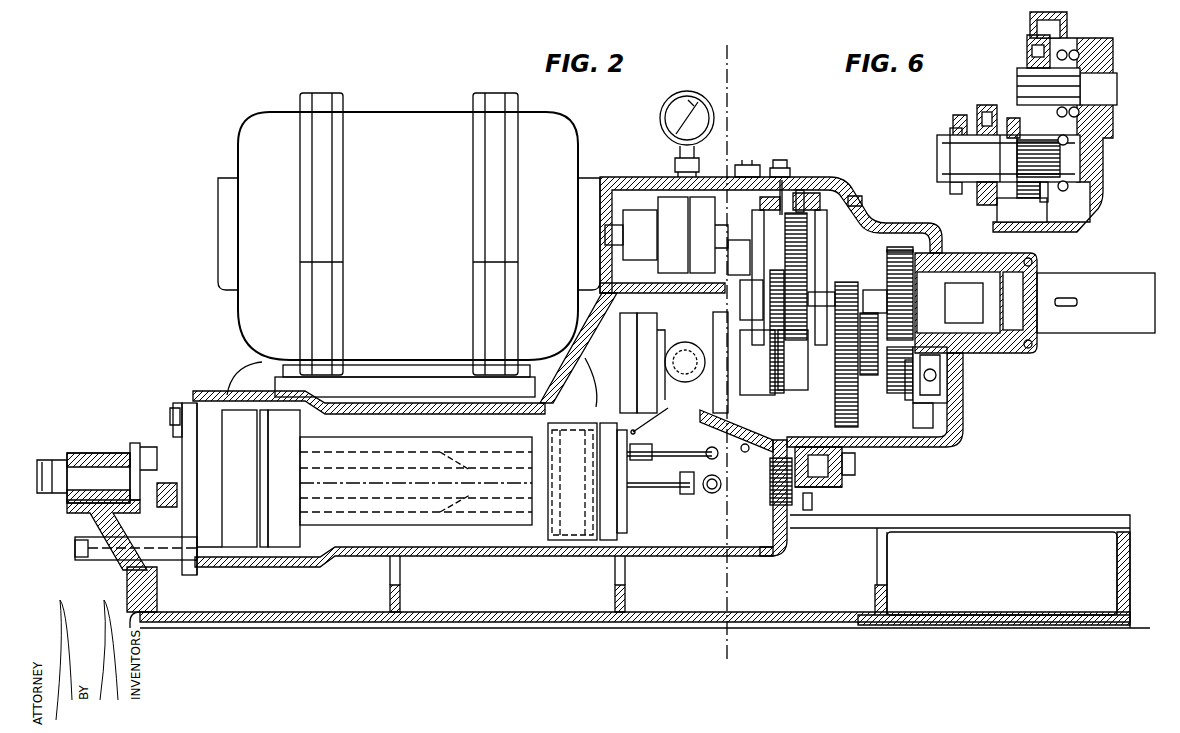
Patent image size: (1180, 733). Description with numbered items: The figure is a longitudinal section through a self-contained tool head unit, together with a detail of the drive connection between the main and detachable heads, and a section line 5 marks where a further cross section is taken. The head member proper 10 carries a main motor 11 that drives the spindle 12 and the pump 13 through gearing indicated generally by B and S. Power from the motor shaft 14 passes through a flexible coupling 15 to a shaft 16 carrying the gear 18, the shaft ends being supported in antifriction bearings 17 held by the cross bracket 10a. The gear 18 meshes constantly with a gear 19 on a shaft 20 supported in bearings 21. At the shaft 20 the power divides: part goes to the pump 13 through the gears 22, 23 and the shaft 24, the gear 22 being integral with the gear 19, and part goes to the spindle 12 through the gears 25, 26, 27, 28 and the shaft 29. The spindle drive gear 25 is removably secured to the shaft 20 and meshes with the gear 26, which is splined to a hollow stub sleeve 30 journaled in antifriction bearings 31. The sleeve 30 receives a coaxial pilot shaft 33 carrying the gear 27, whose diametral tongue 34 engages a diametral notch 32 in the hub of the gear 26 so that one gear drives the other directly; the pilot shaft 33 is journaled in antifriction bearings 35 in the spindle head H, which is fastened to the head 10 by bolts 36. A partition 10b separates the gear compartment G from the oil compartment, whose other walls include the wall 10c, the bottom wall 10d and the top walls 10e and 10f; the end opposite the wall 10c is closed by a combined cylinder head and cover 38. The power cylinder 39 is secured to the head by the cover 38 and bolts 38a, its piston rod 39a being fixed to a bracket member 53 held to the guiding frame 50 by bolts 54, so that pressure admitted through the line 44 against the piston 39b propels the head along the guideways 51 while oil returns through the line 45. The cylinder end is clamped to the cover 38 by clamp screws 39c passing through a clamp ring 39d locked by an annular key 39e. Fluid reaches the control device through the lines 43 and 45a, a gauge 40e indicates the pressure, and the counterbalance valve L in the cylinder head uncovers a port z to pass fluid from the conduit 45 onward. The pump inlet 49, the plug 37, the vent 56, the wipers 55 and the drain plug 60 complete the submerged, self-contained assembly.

In FIG. 2, the section line 5 is at (718, 69).
In FIG. 2, the head member proper 10 is at (648, 178).
In FIG. 2, the cross bracket 10a is at (758, 180).
In FIG. 6, the cross bracket 10a is at (953, 118).
In FIG. 2, the partition 10b is at (722, 436).
In FIG. 2, the wall 10c is at (770, 547).
In FIG. 2, the bottom wall 10d is at (515, 565).
In FIG. 2, the top wall 10e is at (336, 414).
In FIG. 2, the top wall 10f is at (602, 320).
In FIG. 2, the main motor 11 is at (409, 245).
In FIG. 2, the spindle 12 is at (1096, 303).
In FIG. 2, the pump 13 is at (682, 352).
In FIG. 2, the motor shaft 14 is at (638, 210).
In FIG. 2, the flexible coupling 15 is at (693, 235).
In FIG. 2, the shaft 16 is at (784, 276).
In FIG. 2, the antifriction bearings 17 is at (760, 203).
In FIG. 2, the gear 18 is at (799, 206).
In FIG. 2, the gear 19 is at (775, 325).
In FIG. 2, the shaft 20 is at (840, 282).
In FIG. 2, the bearings 21 is at (758, 288).
In FIG. 2, the gear 22 is at (739, 255).
In FIG. 2, the pump shaft gear 23 is at (762, 372).
In FIG. 2, the shaft 24 is at (713, 340).
In FIG. 2, the spindle drive gear 25 is at (870, 344).
In FIG. 2, the gear 26 is at (842, 448).
In FIG. 6, the gear 26 is at (986, 105).
In FIG. 2, the gear 27 is at (925, 428).
In FIG. 6, the gear 27 is at (1044, 202).
In FIG. 2, the gear 28 is at (913, 252).
In FIG. 6, the gear 28 is at (1027, 40).
In FIG. 2, the shaft 29 is at (976, 303).
In FIG. 6, the shaft 29 is at (1112, 97).
In FIG. 6, the stub sleeve 30 is at (937, 152).
In FIG. 2, the antifriction bearings 31 is at (805, 385).
In FIG. 6, the antifriction bearings 31 is at (950, 132).
In FIG. 2, the diametral notch 32 is at (890, 385).
In FIG. 6, the diametral notch 32 is at (1021, 194).
In FIG. 6, the pilot shaft 33 is at (977, 200).
In FIG. 2, the diametral tongue 34 is at (908, 400).
In FIG. 6, the diametral tongue 34 is at (1012, 125).
In FIG. 2, the antifriction bearings 35 is at (948, 400).
In FIG. 6, the antifriction bearings 35 is at (1070, 192).
In FIG. 2, the bolts 36 is at (855, 196).
In FIG. 2, the plug 37 is at (778, 172).
In FIG. 2, the combined cylinder head and cover 38 is at (240, 547).
In FIG. 2, the bolts 38a is at (196, 575).
In FIG. 2, the power cylinder 39 is at (348, 525).
In FIG. 2, the piston rod 39a is at (94, 455).
In FIG. 2, the piston 39b is at (575, 540).
In FIG. 2, the clamp screws 39c is at (335, 548).
In FIG. 2, the clamp ring 39d is at (284, 547).
In FIG. 2, the annular key 39e is at (264, 547).
In FIG. 2, the gauge 40e is at (660, 118).
In FIG. 2, the line 43 is at (652, 421).
In FIG. 2, the line 44 is at (690, 455).
In FIG. 2, the line 45 is at (420, 450).
In FIG. 2, the line 45a is at (760, 500).
In FIG. 2, the pump inlet 49 is at (642, 353).
In FIG. 2, the guiding frame 50 is at (994, 576).
In FIG. 2, the guideways 51 is at (962, 518).
In FIG. 2, the bracket member 53 is at (80, 512).
In FIG. 2, the bolts 54 is at (127, 585).
In FIG. 2, the wiper 55 is at (167, 483).
In FIG. 2, the vent 56 is at (175, 425).
In FIG. 2, the drain plug 60 is at (75, 549).
In FIG. 2, the gearing B is at (786, 200).
In FIG. 2, the gear compartment G is at (838, 480).
In FIG. 2, the spindle head H is at (948, 425).
In FIG. 6, the spindle head H is at (1100, 180).
In FIG. 2, the counterbalance valve L is at (165, 432).
In FIG. 2, the gearing S is at (917, 238).
In FIG. 6, the gearing S is at (991, 81).
In FIG. 2, the port z is at (232, 395).